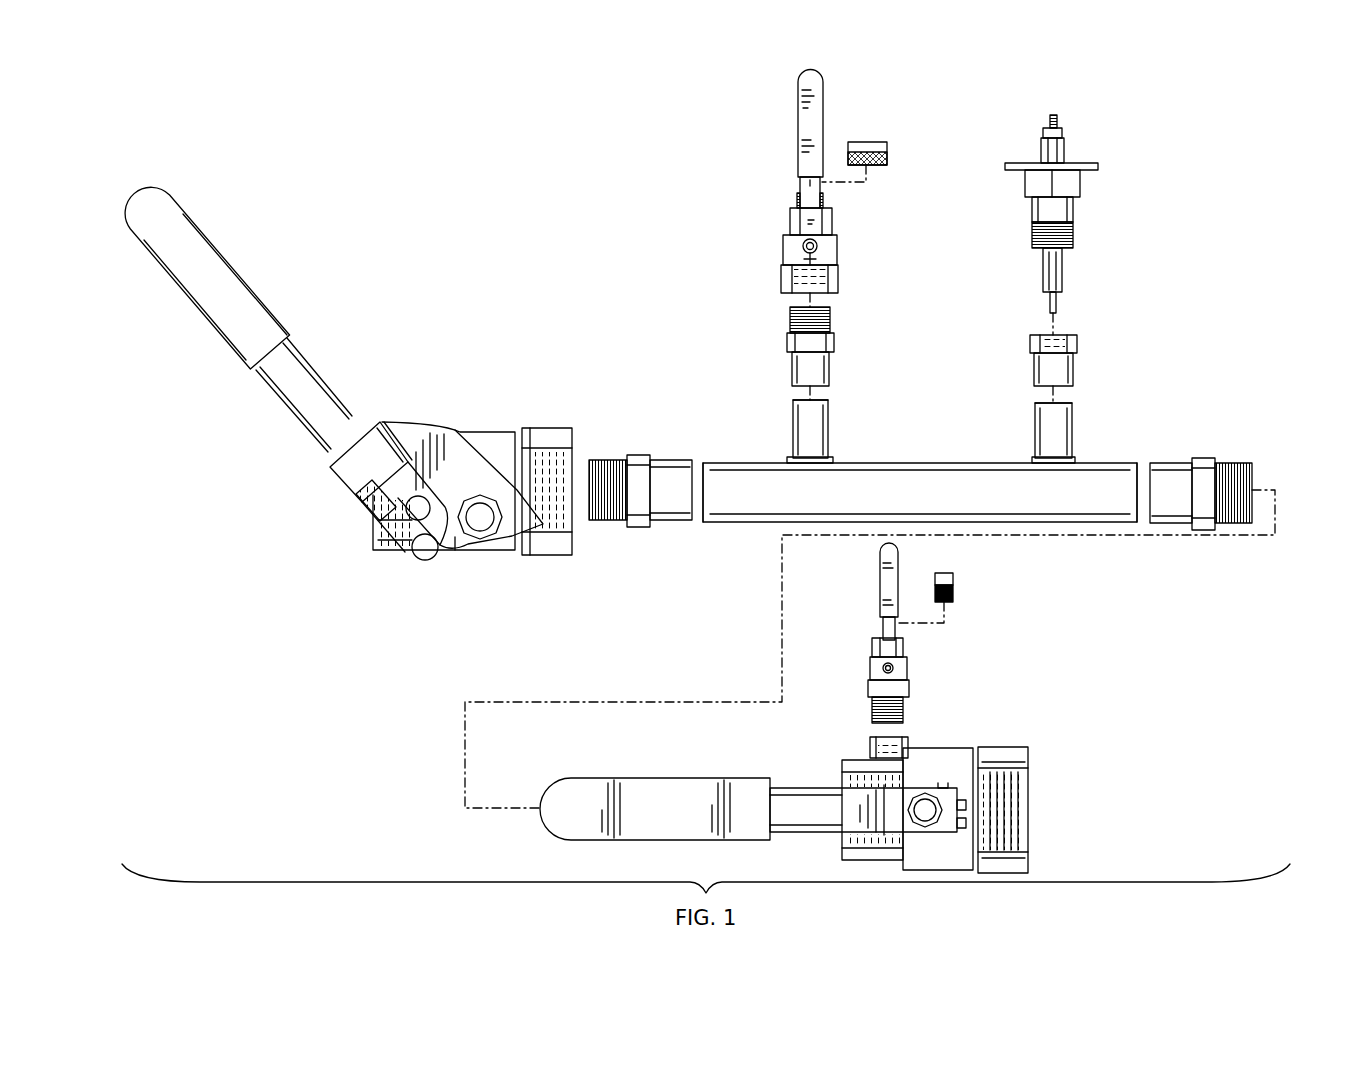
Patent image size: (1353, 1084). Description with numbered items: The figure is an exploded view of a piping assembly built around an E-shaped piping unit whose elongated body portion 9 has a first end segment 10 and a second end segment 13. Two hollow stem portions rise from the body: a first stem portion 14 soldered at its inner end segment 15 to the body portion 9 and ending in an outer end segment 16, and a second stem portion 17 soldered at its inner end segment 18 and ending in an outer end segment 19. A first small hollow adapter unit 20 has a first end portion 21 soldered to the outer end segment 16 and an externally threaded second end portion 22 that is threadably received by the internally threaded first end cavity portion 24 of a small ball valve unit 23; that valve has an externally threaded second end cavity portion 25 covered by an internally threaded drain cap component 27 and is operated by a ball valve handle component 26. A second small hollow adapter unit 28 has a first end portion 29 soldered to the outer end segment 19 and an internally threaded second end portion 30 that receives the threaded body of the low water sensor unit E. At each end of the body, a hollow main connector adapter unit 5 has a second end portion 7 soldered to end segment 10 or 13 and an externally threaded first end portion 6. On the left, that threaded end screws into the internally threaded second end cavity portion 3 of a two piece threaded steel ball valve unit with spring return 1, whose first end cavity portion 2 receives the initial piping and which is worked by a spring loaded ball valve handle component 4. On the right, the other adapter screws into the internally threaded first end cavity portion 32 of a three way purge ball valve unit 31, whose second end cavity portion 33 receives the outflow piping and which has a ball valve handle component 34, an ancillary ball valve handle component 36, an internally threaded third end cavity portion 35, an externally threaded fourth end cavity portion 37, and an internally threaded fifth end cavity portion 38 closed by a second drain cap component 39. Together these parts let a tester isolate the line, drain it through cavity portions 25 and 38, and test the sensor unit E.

The two piece threaded steel ball valve unit with spring return 1 is at (486, 430).
The first end cavity portion 2 is at (398, 522).
The second end cavity portion 3 is at (573, 455).
The spring loaded ball valve handle component 4 is at (216, 252).
The hollow main connector adapter unit 5 is at (640, 460).
The externally threaded first end portion 6 is at (610, 461).
The second end portion 7 is at (679, 462).
The elongated body portion 9 is at (933, 463).
The first end segment 10 is at (717, 463).
The second end segment 13 is at (1123, 463).
The first stem portion 14 is at (794, 422).
The inner end segment 15 is at (792, 458).
The outer end segment 16 is at (817, 427).
The second stem portion 17 is at (1056, 428).
The inner end segment 18 is at (1035, 459).
The outer end segment 19 is at (1036, 425).
The first small hollow adapter unit 20 is at (834, 346).
The first end portion 21 is at (792, 379).
The externally threaded second end portion 22 is at (792, 330).
The small ball valve unit 23 is at (787, 256).
The internally threaded first end cavity portion 24 is at (831, 283).
The externally threaded second end cavity portion 25 is at (823, 196).
The ball valve handle component 26 is at (822, 84).
The internally threaded drain cap component 27 is at (880, 150).
The second small hollow adapter unit 28 is at (1053, 357).
The first end portion 29 is at (1034, 382).
The internally threaded second end portion 30 is at (1031, 344).
The three way purge ball valve unit 31 is at (962, 749).
The internally threaded first end cavity portion 32 is at (847, 779).
The internally threaded second end cavity portion 33 is at (1032, 810).
The ball valve handle component 34 is at (593, 790).
The internally threaded third end cavity portion 35 is at (900, 740).
The ancillary ball valve handle component 36 is at (883, 589).
The externally threaded fourth end cavity portion 37 is at (874, 712).
The internally threaded fifth end cavity portion 38 is at (873, 648).
The second drain cap component 39 is at (954, 594).
The low water sensor unit E is at (1081, 184).